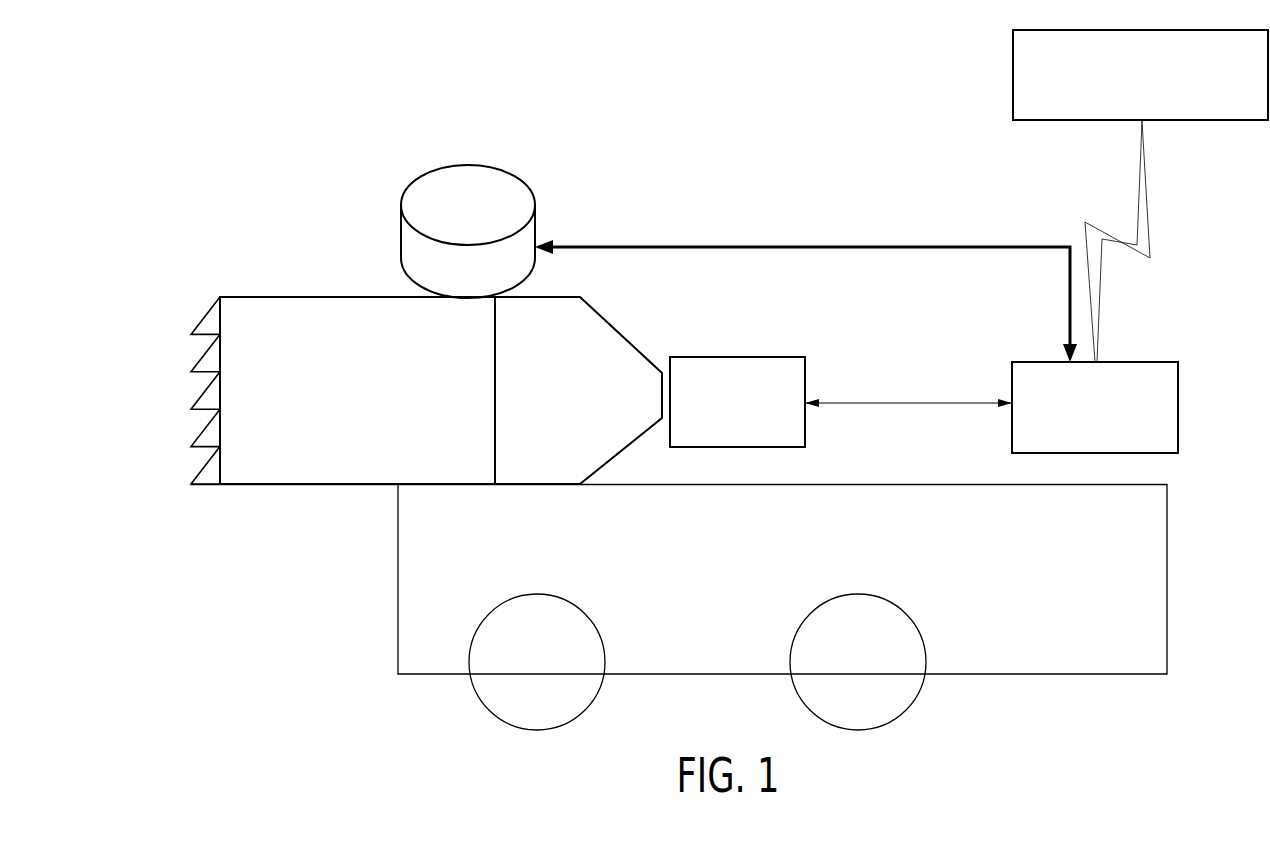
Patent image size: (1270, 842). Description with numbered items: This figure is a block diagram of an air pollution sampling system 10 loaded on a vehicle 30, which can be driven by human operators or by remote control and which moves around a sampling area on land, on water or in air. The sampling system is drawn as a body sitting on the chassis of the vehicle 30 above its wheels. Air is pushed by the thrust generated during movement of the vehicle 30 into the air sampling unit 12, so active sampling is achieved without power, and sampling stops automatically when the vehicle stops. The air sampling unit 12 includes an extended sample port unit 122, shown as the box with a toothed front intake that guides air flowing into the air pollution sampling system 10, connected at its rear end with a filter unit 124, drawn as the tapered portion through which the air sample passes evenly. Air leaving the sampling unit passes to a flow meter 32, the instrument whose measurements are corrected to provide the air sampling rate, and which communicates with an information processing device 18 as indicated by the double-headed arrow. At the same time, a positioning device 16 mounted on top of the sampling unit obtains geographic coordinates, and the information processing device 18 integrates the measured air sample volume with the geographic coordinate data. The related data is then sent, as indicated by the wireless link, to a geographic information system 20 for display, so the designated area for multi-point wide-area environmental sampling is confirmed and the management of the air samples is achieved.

The air pollution sampling system 10 is at (88, 219).
The air sampling unit 12 is at (366, 262).
The extended sample port unit 122 is at (292, 297).
The filter unit 124 is at (585, 362).
The positioning device 16 is at (469, 172).
The information processing device 18 is at (1038, 362).
The geographic information system 20 is at (1013, 87).
The vehicle 30 is at (1115, 602).
The flow meter 32 is at (788, 397).